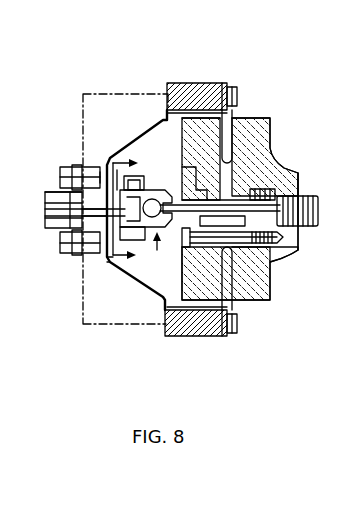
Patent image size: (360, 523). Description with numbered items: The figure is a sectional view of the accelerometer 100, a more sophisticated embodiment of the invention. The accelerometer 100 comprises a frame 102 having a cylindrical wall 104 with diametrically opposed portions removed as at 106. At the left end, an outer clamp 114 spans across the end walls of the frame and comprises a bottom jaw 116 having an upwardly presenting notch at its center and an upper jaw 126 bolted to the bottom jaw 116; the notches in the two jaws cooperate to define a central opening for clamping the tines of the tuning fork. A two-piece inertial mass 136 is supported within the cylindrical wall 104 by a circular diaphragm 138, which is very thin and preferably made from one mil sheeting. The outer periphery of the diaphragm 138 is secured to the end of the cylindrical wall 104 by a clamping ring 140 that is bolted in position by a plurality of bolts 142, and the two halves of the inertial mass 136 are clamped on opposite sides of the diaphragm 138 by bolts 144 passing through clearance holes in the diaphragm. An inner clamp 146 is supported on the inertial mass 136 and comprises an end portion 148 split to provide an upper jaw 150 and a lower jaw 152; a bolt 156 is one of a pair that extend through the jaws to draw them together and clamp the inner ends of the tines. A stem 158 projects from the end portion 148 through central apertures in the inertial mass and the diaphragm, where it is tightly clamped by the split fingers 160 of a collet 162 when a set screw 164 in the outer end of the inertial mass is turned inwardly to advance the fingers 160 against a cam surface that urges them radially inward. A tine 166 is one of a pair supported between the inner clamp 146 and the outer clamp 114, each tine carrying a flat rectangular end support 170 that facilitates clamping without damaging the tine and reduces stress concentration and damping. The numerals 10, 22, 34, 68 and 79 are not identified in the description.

The accelerometer 100 is at (68, 80).
The frame 102 is at (136, 73).
The cylindrical wall 104 is at (205, 82).
The removed portions 106 is at (166, 108).
The clamping ring 140 is at (228, 84).
The bolts 142 is at (238, 96).
The circular diaphragm 138 is at (280, 112).
The end portion 148 is at (183, 178).
The stem 158 is at (277, 140).
The bolts 144 is at (200, 252).
The collet 162 is at (296, 181).
The set screw 164 is at (318, 212).
The split fingers 160 is at (276, 168).
The inner clamp 146 is at (165, 228).
The lower jaw 152 is at (85, 240).
The tine 166 is at (76, 167).
The upper jaw 126 is at (58, 192).
The lower nut 68 is at (72, 232).
The bottom jaw 116 is at (47, 208).
The bushing top 79 is at (45, 197).
The outer clamp 114 is at (38, 218).
The rod section 22 is at (75, 216).
The mount 34 is at (50, 156).
The upper jaw 150 is at (107, 160).
The end support 170 is at (107, 172).
The bolt 156 is at (110, 268).
The inertial mass 136 is at (118, 315).
The direction arrows 10 is at (137, 203).